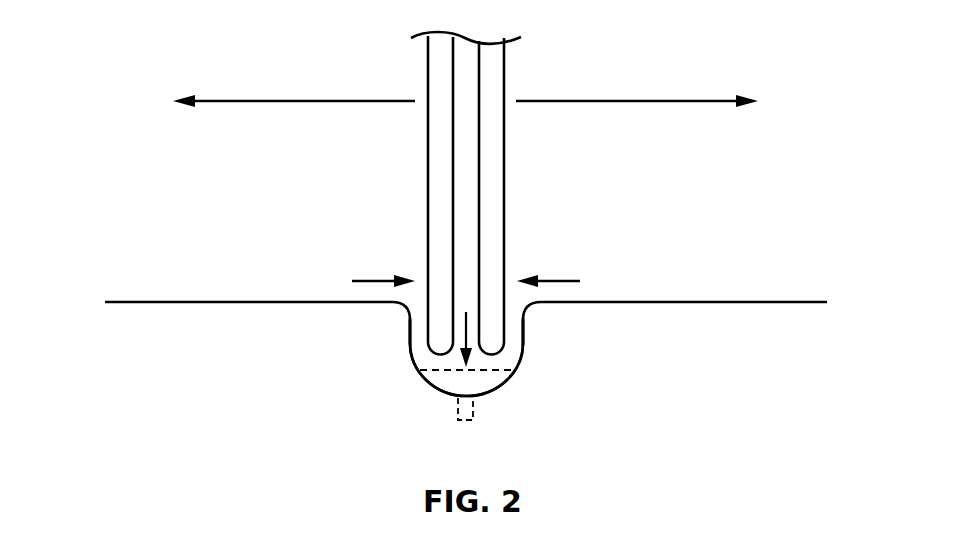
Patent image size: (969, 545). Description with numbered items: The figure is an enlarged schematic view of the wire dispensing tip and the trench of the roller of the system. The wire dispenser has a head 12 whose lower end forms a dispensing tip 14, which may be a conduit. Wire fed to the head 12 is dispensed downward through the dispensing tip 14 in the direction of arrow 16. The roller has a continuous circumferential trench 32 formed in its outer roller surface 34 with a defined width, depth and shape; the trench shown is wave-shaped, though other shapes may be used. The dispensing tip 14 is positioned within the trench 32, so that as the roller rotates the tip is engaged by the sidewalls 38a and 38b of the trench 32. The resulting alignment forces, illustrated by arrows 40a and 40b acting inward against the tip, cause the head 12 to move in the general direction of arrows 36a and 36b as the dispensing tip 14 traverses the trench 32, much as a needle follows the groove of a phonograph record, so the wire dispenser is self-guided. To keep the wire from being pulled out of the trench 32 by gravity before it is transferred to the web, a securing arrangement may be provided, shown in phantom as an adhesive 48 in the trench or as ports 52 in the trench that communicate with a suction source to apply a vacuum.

The head 12 is at (414, 157).
The dispensing tip 14 is at (505, 314).
The arrow 16 is at (466, 332).
The trench 32 is at (385, 387).
The outer roller surface 34 is at (702, 301).
The arrow 36a is at (302, 101).
The arrow 36b is at (632, 101).
The sidewall 38a is at (410, 322).
The sidewall 38b is at (523, 342).
The arrow 40a is at (375, 281).
The arrow 40b is at (555, 281).
The adhesive 48 is at (485, 372).
The ports 52 is at (474, 408).